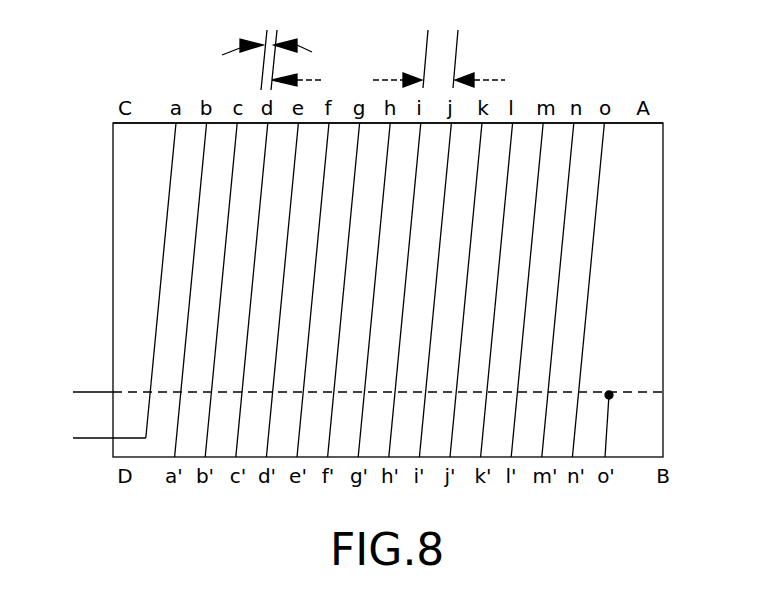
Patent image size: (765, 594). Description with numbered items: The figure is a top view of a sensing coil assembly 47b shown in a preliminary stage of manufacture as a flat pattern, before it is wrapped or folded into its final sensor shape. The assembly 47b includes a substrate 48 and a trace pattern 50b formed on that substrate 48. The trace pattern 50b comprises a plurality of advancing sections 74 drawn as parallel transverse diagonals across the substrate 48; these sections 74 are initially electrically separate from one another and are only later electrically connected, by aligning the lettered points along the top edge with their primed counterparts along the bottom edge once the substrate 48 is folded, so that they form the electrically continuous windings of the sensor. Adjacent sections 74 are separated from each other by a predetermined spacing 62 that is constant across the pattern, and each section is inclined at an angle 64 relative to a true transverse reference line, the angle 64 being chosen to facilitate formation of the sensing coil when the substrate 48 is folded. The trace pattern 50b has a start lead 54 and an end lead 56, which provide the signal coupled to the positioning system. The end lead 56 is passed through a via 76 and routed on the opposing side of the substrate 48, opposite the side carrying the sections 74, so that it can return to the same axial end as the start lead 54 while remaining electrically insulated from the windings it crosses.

The sensing coil assembly 47b is at (163, 97).
The substrate 48 is at (138, 162).
The trace pattern 50b is at (140, 232).
The advancing sections 74 is at (217, 310).
The end lead 56 is at (80, 392).
The start lead 54 is at (84, 438).
The angle 64 is at (303, 52).
The spacing 62 is at (488, 80).
The via 76 is at (611, 392).